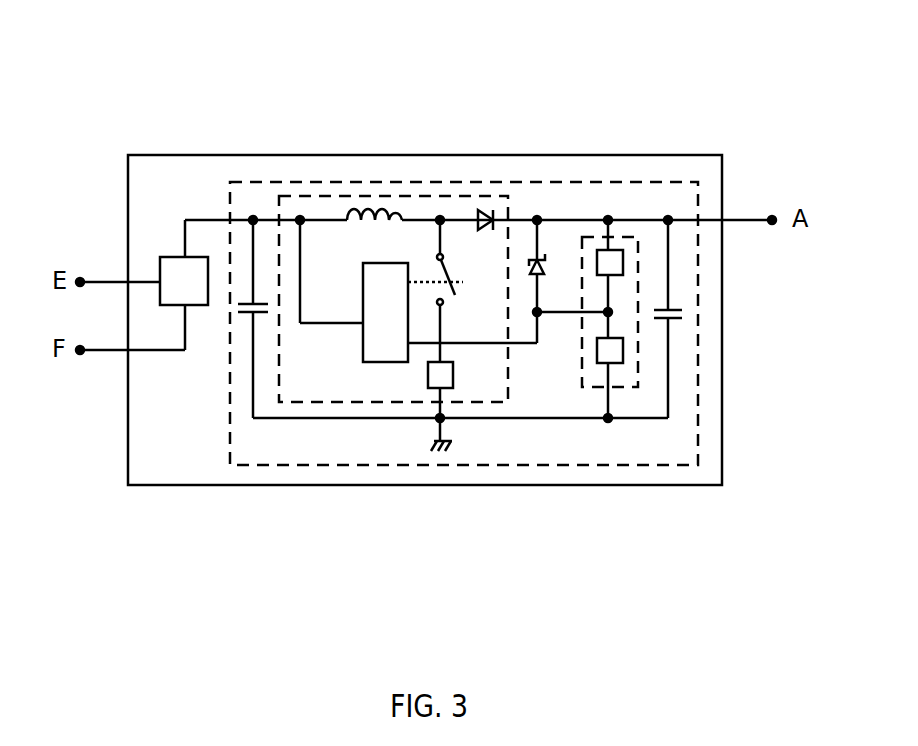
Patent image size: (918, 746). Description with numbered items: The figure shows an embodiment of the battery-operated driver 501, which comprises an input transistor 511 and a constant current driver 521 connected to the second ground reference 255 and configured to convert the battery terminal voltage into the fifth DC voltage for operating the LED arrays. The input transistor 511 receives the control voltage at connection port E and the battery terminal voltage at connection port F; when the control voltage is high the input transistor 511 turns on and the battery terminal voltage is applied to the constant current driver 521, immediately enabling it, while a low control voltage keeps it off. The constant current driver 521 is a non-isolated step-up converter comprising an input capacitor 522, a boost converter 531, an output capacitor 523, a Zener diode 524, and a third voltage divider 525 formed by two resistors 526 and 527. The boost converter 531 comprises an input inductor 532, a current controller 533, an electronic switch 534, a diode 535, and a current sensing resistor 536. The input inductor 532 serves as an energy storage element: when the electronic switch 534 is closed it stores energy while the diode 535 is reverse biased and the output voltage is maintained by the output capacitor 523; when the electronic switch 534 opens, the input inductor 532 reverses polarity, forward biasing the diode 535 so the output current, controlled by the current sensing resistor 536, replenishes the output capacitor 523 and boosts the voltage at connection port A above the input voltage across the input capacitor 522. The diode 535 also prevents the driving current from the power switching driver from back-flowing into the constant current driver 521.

The battery-operated driver 501 is at (439, 148).
The input transistor 511 is at (172, 255).
The constant current driver 521 is at (600, 177).
The input capacitor 522 is at (248, 318).
The output capacitor 523 is at (677, 306).
The Zener diode 524 is at (542, 256).
The third voltage divider 525 is at (647, 374).
The resistor 526 is at (621, 249).
The resistor 527 is at (613, 364).
The boost converter 531 is at (354, 410).
The input inductor 532 is at (373, 204).
The current controller 533 is at (363, 262).
The electronic switch 534 is at (456, 297).
The diode 535 is at (487, 210).
The current sensing resistor 536 is at (455, 386).
The second ground reference 255 is at (436, 452).